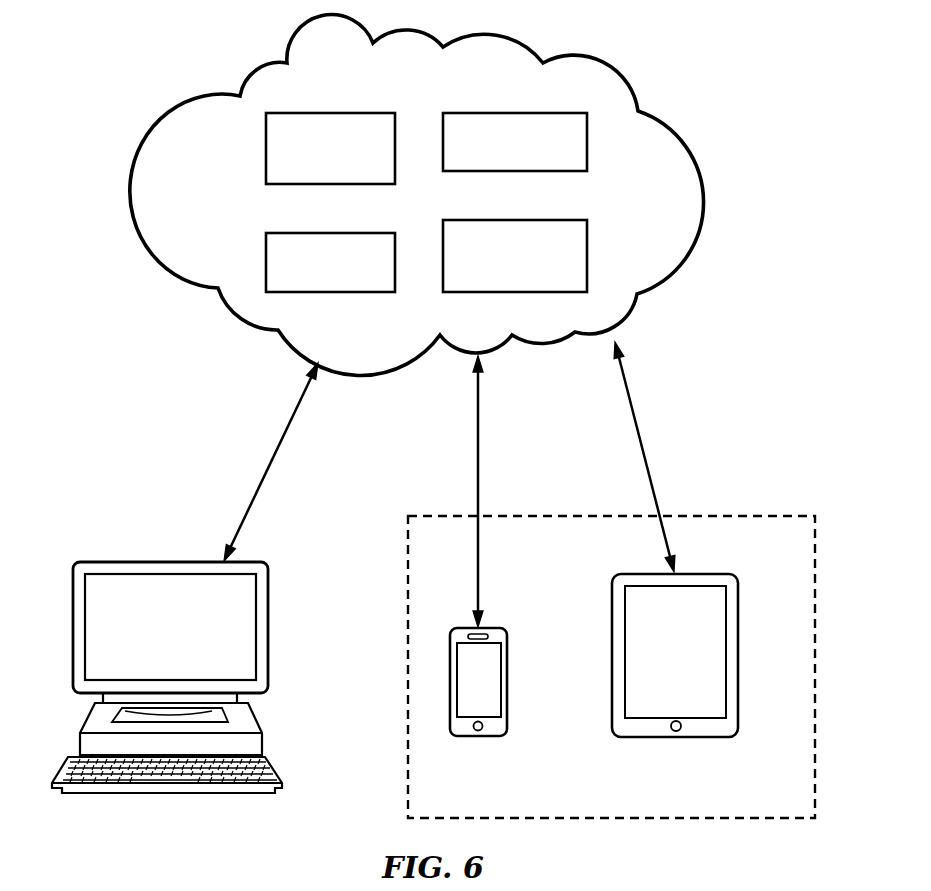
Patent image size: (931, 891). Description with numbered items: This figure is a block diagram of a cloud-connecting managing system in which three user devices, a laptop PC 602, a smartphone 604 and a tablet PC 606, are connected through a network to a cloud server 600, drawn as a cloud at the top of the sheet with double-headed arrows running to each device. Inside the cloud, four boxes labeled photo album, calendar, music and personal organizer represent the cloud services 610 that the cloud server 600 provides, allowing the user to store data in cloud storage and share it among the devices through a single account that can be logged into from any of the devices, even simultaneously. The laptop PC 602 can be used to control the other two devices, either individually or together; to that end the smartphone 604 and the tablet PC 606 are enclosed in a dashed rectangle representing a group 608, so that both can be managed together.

The cloud server 600 is at (478, 37).
The cloud services 610 is at (353, 113).
The laptop PC 602 is at (147, 562).
The smartphone 604 is at (490, 737).
The tablet PC 606 is at (700, 737).
The group 608 is at (732, 516).